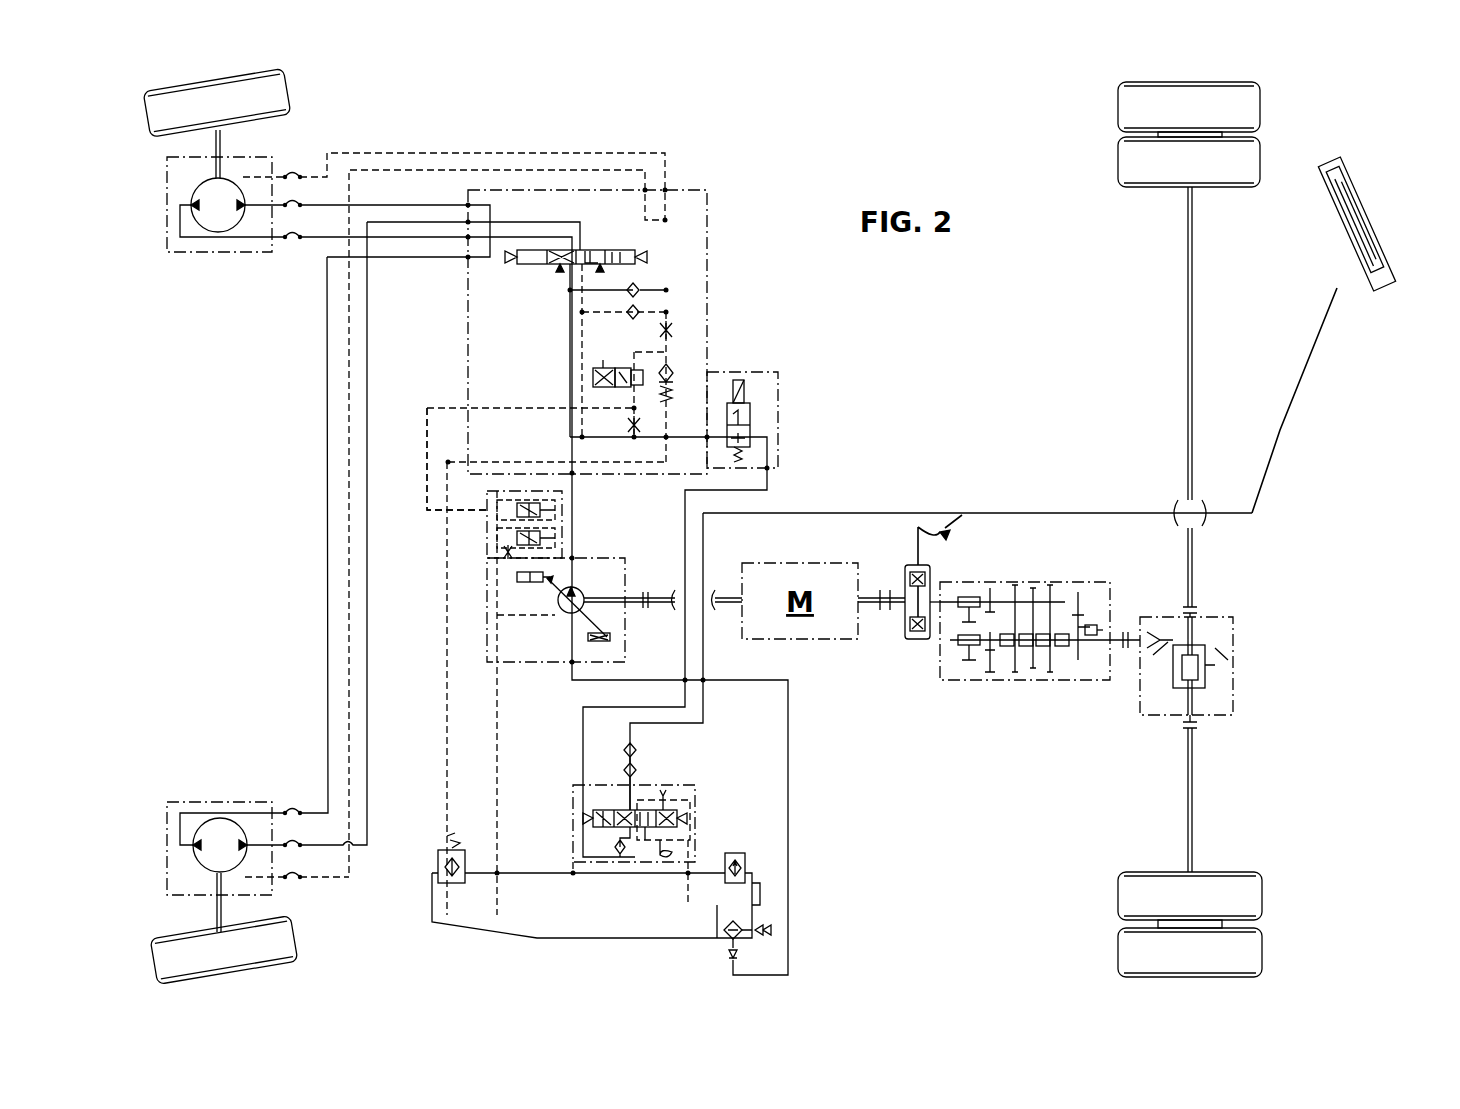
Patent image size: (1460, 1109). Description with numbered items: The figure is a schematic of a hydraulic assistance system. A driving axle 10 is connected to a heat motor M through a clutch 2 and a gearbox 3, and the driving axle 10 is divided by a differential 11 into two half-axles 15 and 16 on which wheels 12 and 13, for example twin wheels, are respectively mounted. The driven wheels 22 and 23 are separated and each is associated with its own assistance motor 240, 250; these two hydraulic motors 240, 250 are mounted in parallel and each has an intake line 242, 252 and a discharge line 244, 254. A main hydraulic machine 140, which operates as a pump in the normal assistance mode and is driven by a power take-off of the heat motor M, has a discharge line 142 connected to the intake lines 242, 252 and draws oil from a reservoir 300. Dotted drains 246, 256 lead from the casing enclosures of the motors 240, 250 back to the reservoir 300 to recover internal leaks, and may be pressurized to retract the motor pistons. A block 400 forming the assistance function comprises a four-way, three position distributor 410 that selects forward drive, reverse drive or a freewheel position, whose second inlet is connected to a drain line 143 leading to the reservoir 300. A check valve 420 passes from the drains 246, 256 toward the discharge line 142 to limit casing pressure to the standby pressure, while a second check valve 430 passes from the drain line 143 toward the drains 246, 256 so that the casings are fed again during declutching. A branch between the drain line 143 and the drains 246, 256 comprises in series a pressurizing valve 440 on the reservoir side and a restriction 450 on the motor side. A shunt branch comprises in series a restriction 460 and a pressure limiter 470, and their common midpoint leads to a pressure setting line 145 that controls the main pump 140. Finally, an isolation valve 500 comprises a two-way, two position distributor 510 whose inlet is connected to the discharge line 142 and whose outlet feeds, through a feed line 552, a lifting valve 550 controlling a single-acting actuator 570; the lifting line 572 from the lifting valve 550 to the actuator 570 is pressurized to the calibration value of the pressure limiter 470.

The clutch 2 is at (914, 650).
The gearbox 3 is at (1028, 574).
The driving axle 10 is at (1160, 382).
The differential 11 is at (1242, 662).
The wheel 12 is at (1272, 133).
The wheel 13 is at (1272, 921).
The half-axle 15 is at (1193, 346).
The half-axle 16 is at (1193, 796).
The driven wheel 22 is at (130, 120).
The driven wheel 23 is at (131, 929).
The main hydraulic machine 140 is at (558, 624).
The discharge line 142 is at (573, 526).
The drain line 143 is at (446, 670).
The pressure setting line 145 is at (428, 406).
The assistance motor 240 is at (162, 206).
The intake line 242 is at (326, 203).
The discharge line 244 is at (326, 242).
The drain 246 is at (427, 153).
The assistance motor 250 is at (164, 843).
The intake line 252 is at (341, 880).
The discharge line 254 is at (221, 813).
The drain 256 is at (327, 496).
The reservoir 300 is at (618, 908).
The assistance valve block 400 is at (573, 190).
The four-way, three position distributor 410 is at (600, 248).
The check valve 420 is at (642, 287).
The second check valve 430 is at (642, 309).
The pressurizing valve 440 is at (678, 362).
The restriction 450 is at (674, 326).
The restriction 460 is at (626, 422).
The pressure limiter 470 is at (610, 364).
The isolation valve 500 is at (763, 370).
The two-way, two position distributor 510 is at (758, 424).
The lifting valve 550 is at (698, 818).
The feed line 552 is at (768, 482).
The single-acting actuator 570 is at (1372, 256).
The lifting line 572 is at (1282, 436).